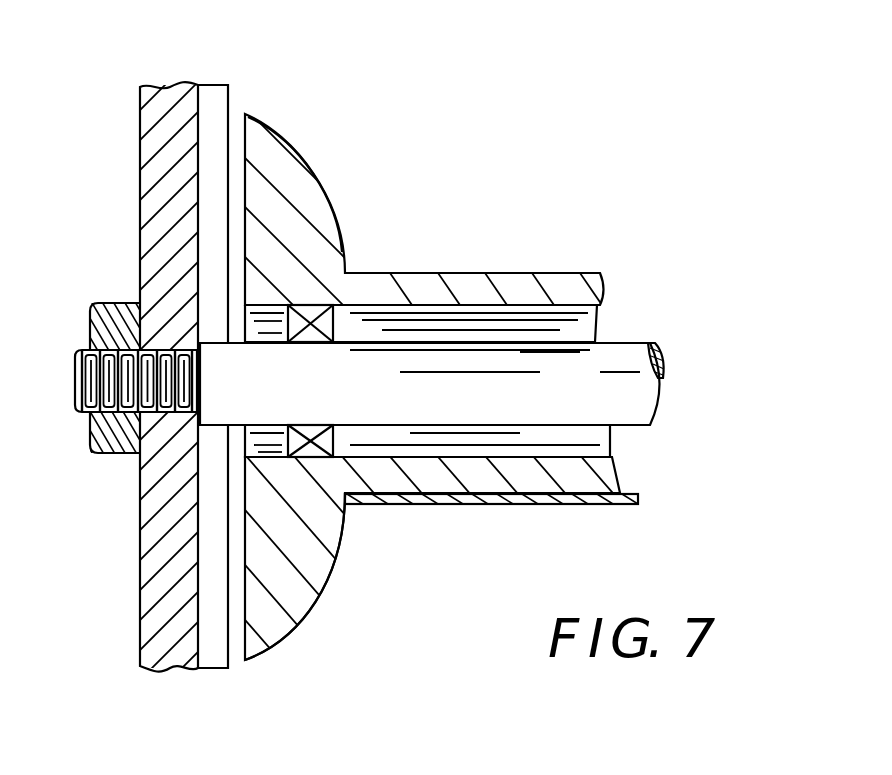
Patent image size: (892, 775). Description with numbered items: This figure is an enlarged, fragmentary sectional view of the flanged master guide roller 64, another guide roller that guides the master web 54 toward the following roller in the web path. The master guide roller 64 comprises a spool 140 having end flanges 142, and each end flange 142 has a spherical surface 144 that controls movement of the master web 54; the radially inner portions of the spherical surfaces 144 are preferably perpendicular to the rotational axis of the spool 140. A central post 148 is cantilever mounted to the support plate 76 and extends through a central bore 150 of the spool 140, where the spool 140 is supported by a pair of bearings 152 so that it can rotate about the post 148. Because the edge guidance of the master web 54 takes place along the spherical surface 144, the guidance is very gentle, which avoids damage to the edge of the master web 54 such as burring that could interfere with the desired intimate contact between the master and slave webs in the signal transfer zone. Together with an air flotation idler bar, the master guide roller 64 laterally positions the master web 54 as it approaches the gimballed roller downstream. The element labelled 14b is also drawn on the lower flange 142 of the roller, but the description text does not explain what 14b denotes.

The support plate 76 is at (158, 86).
The spherical surfaces 144 is at (301, 158).
The end flanges 142 is at (424, 254).
The bearings 152 is at (323, 293).
The flanged master guide roller 64 is at (478, 244).
The central post 148 is at (663, 356).
The central bore 150 is at (598, 447).
The master web 54 is at (507, 500).
The housing flange 14b is at (345, 528).
The spool 140 is at (315, 602).